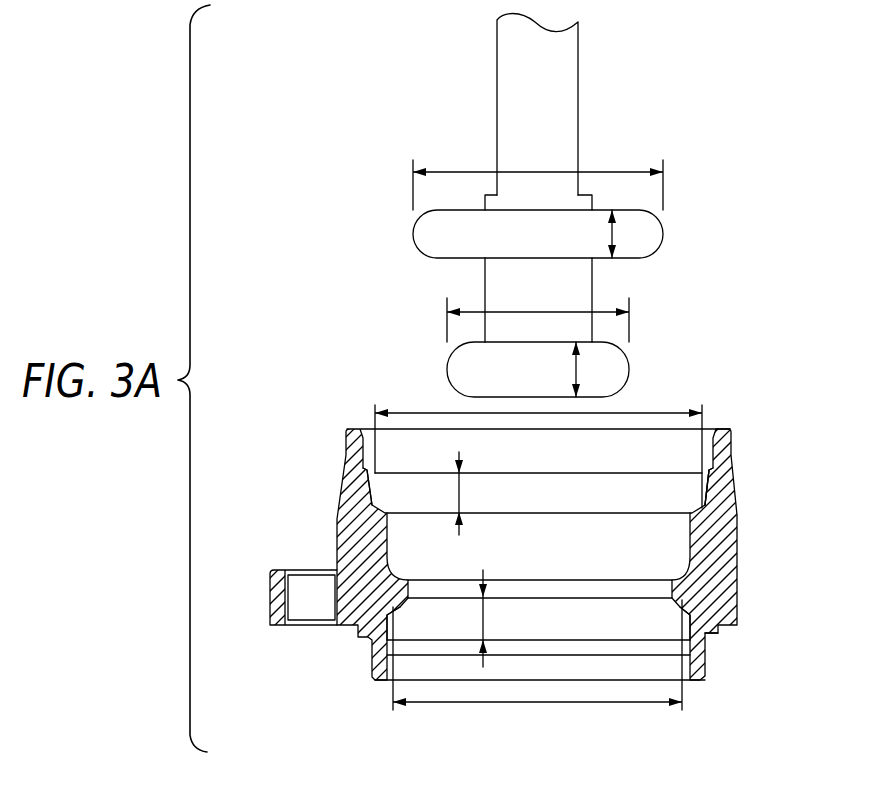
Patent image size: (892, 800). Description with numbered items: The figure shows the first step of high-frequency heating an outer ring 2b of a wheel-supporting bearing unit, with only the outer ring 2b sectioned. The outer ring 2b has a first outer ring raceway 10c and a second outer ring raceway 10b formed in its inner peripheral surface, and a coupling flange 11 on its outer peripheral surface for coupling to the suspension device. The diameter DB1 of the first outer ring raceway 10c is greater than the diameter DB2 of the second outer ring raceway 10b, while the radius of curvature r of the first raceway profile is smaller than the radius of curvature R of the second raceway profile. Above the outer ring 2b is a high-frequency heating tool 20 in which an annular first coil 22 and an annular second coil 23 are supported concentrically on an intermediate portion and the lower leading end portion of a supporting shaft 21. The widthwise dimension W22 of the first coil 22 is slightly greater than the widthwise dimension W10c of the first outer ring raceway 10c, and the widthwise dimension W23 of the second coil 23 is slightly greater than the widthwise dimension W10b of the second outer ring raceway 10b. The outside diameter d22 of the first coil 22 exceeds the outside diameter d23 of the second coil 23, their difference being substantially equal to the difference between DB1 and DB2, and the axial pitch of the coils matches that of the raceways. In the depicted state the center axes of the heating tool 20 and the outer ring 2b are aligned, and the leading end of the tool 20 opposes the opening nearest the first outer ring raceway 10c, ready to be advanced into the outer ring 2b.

The high-frequency heating tool 20 is at (663, 241).
The supporting shaft 21 is at (557, 100).
The first coil 22 is at (420, 233).
The second coil 23 is at (465, 375).
The outside diameter of the first coil d22 is at (465, 165).
The outside diameter of the second coil d23 is at (493, 308).
The widthwise dimension of the first coil W22 is at (614, 232).
The widthwise dimension of the second coil W23 is at (578, 372).
The outer ring 2b is at (738, 545).
The coupling flange 11 is at (280, 603).
The first outer ring raceway 10c is at (372, 492).
The second outer ring raceway 10b is at (390, 640).
The widthwise dimension of the first outer ring raceway W10c is at (460, 492).
The widthwise dimension of the second outer ring raceway W10b is at (485, 620).
The diameter of the first outer ring raceway DB1 is at (650, 413).
The diameter of the second outer ring raceway DB2 is at (534, 703).
The radius of curvature of the first outer ring raceway r is at (694, 504).
The radius of curvature of the second outer ring raceway R is at (678, 614).